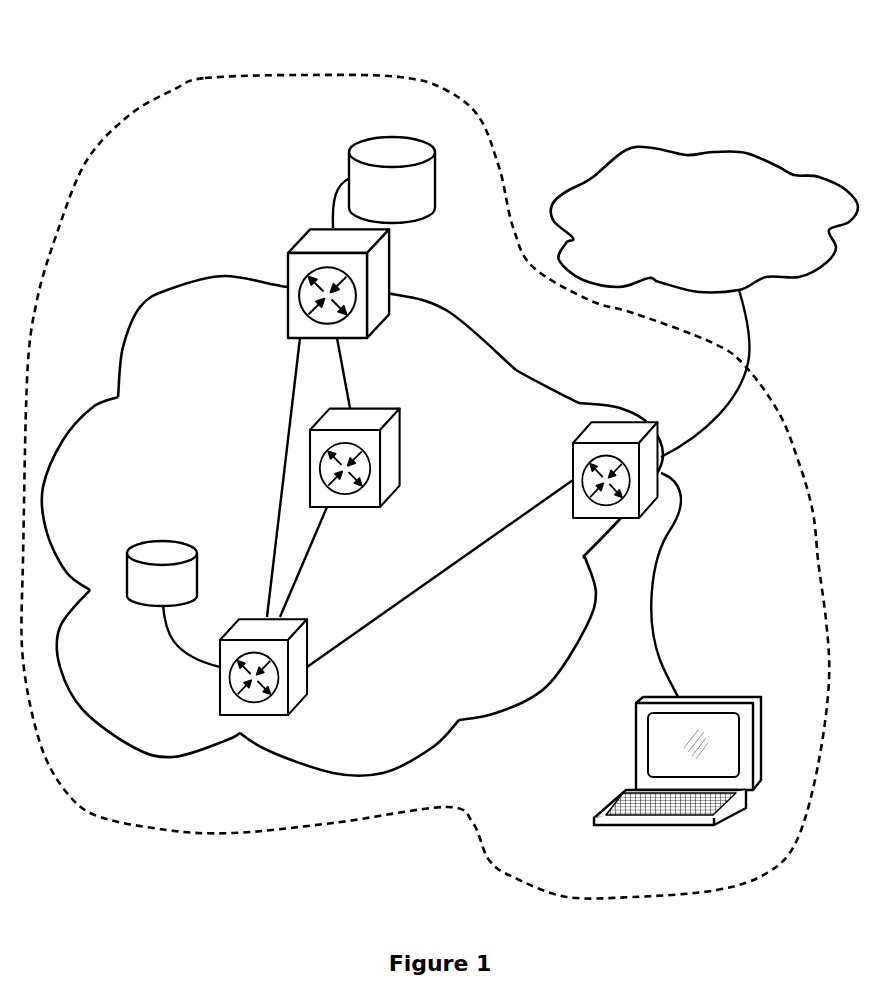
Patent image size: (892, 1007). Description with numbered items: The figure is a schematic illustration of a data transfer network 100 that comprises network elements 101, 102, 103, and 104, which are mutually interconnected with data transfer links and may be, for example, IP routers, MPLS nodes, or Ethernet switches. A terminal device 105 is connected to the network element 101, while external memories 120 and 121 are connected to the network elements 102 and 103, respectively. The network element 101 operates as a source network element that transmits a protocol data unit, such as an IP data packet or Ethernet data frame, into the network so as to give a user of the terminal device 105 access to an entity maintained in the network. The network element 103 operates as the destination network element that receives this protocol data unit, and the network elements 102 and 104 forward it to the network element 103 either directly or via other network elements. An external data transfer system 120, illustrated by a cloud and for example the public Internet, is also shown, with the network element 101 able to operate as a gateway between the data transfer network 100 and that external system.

The data transfer network 100 is at (207, 79).
The network element 101 is at (619, 421).
The network element 102 is at (220, 705).
The network element 103 is at (290, 252).
The network element 104 is at (355, 507).
The terminal device 105 is at (716, 694).
The external data transfer system 120 is at (654, 230).
The external memory 121 is at (375, 203).